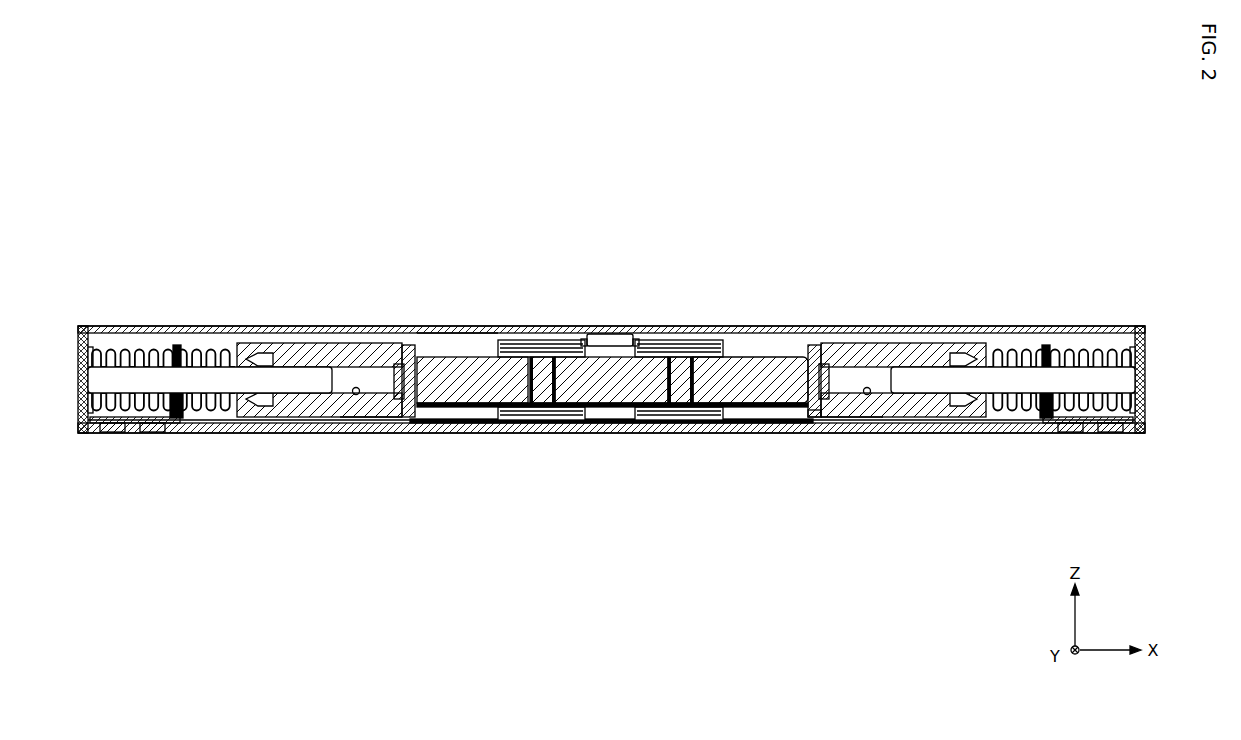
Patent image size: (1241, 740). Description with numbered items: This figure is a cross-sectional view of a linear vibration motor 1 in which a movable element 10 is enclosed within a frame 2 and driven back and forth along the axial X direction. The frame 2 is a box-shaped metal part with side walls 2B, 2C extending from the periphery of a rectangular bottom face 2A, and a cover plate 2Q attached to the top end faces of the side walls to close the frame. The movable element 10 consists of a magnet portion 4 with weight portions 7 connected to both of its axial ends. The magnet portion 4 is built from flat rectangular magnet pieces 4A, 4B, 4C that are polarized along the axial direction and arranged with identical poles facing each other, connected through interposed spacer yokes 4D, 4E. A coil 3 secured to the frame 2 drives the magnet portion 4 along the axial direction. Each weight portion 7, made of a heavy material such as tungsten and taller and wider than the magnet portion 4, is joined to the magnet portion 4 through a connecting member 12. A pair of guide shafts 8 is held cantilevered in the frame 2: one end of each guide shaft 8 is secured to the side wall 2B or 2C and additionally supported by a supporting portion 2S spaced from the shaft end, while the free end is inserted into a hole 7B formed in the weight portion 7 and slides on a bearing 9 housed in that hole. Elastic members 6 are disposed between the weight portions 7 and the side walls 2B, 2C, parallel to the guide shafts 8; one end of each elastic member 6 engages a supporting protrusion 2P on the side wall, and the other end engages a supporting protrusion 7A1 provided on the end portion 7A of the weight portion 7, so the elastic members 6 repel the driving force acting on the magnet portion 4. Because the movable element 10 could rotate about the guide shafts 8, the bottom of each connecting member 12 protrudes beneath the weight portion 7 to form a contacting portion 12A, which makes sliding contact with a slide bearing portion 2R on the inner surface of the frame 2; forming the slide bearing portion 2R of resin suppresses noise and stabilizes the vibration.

The linear vibration motor 1 is at (790, 200).
The frame 2 is at (1047, 446).
The bottom face 2A is at (590, 426).
The side wall 2B is at (95, 328).
The side wall 2C is at (1128, 328).
The supporting protrusion 2P is at (93, 350).
The cover plate 2Q is at (722, 334).
The slide bearing portion 2R is at (790, 424).
The supporting portion 2S is at (177, 345).
The coil 3 is at (548, 340).
The magnet portion 4 is at (612, 463).
The magnet piece 4A is at (470, 410).
The magnet piece 4B is at (628, 406).
The magnet piece 4C is at (750, 443).
The spacer yoke 4D is at (540, 406).
The spacer yoke 4E is at (676, 406).
The elastic member 6 is at (200, 414).
The weight portion 7 is at (355, 343).
The end portion of weight portion 7A is at (240, 346).
The supporting protrusion 7A1 is at (243, 356).
The hole 7B is at (360, 424).
The guide shaft 8 is at (300, 368).
The bearing 9 is at (257, 407).
The movable element 10 is at (458, 342).
The connecting member 12 is at (408, 345).
The contacting portion 12A is at (820, 418).